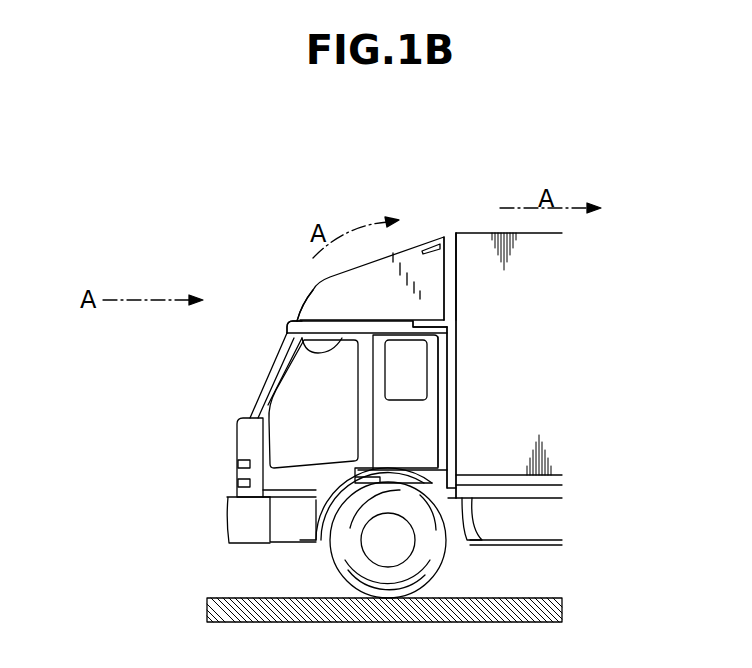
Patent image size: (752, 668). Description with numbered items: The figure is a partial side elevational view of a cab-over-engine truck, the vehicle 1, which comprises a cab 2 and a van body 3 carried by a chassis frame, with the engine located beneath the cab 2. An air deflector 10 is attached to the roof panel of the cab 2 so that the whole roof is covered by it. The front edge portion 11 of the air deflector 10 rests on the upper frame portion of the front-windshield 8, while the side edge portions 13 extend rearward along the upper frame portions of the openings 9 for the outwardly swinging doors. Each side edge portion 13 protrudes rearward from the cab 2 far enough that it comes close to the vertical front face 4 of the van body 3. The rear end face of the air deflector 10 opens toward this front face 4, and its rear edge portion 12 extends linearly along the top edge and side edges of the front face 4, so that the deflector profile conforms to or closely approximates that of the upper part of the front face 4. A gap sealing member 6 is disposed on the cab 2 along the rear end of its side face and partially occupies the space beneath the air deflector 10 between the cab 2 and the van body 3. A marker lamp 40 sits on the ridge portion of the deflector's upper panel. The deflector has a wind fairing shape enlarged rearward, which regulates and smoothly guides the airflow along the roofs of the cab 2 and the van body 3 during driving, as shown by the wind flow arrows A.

The vehicle 1 is at (138, 369).
The cab 2 is at (238, 437).
The van body 3 is at (489, 236).
The vertical front face 4 is at (453, 252).
The gap sealing member 6 is at (442, 362).
The front-windshield 8 is at (262, 387).
The opening 9 is at (297, 345).
The air deflector 10 is at (366, 259).
The front edge portion 11 is at (300, 312).
The rear edge portion 12 is at (447, 298).
The side edge portion 13 is at (392, 313).
The marker lamp 40 is at (428, 239).